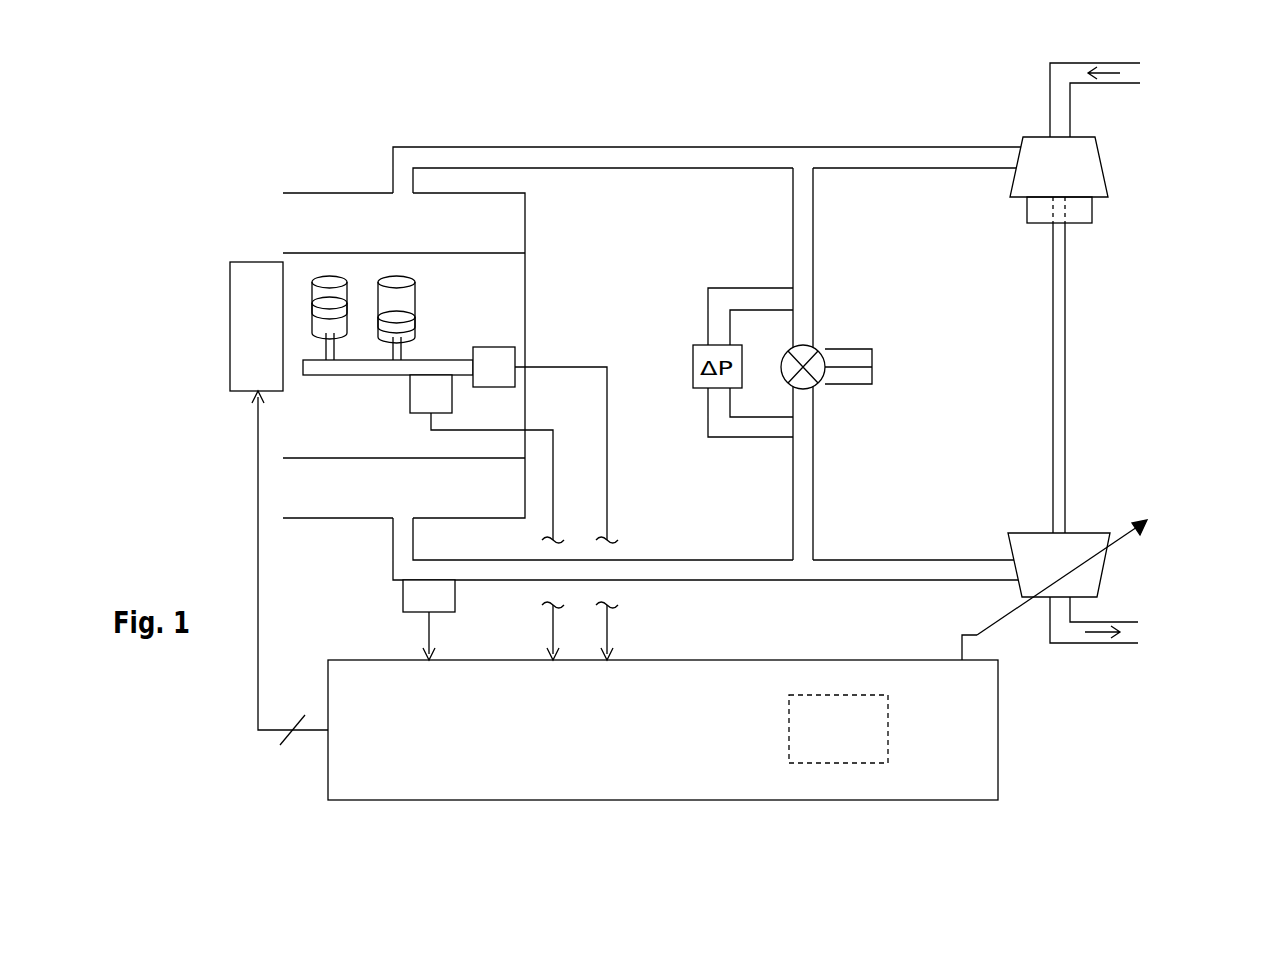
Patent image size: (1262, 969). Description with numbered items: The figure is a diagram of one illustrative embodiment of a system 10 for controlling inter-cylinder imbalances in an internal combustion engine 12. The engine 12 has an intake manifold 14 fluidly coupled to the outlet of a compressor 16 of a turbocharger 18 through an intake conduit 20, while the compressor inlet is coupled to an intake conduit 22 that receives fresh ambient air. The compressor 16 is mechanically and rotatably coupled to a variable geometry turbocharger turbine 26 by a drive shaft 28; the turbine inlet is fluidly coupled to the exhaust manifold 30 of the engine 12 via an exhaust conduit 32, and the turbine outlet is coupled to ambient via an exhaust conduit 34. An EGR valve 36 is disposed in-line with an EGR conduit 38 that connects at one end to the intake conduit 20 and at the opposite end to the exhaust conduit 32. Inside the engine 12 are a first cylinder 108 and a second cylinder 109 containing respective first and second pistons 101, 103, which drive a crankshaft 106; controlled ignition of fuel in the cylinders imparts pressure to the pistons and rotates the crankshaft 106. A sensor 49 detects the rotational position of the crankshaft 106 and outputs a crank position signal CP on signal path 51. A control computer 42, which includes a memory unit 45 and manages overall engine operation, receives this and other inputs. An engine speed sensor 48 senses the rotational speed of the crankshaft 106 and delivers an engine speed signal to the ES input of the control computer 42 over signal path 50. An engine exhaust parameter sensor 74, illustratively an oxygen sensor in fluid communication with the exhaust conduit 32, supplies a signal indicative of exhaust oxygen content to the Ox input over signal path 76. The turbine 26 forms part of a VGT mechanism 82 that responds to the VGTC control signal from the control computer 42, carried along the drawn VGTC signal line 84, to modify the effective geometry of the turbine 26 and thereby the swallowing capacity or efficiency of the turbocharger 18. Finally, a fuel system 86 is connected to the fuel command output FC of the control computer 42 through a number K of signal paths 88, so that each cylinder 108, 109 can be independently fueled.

The system 10 is at (188, 128).
The internal combustion engine 12 is at (525, 270).
The intake manifold 14 is at (338, 193).
The compressor 16 is at (1103, 167).
The turbocharger 18 is at (1135, 297).
The intake conduit 20 is at (543, 147).
The intake conduit 22 is at (1117, 83).
The variable geometry turbocharger turbine 26 is at (1030, 532).
The drive shaft 28 is at (1070, 347).
The exhaust manifold 30 is at (330, 520).
The exhaust conduit 32 is at (777, 580).
The exhaust conduit 34 is at (1122, 645).
The EGR valve 36 is at (798, 347).
The EGR conduit 38 is at (813, 490).
The control computer 42 is at (998, 780).
The memory unit 45 is at (789, 748).
The engine speed sensor 48 is at (515, 347).
The sensor 49 is at (410, 402).
The signal path 50 is at (607, 470).
The signal path 51 is at (553, 520).
The engine exhaust parameter sensor 74 is at (403, 593).
The signal path 76 is at (427, 635).
The VGT mechanism 82 is at (1123, 538).
The VGT control signal path 84 is at (997, 625).
The fuel system 86 is at (230, 325).
The signal paths 88 is at (258, 623).
The first piston 101 is at (310, 308).
The second piston 103 is at (415, 327).
The crankshaft 106 is at (343, 367).
The first cylinder 108 is at (320, 276).
The second cylinder 109 is at (415, 293).